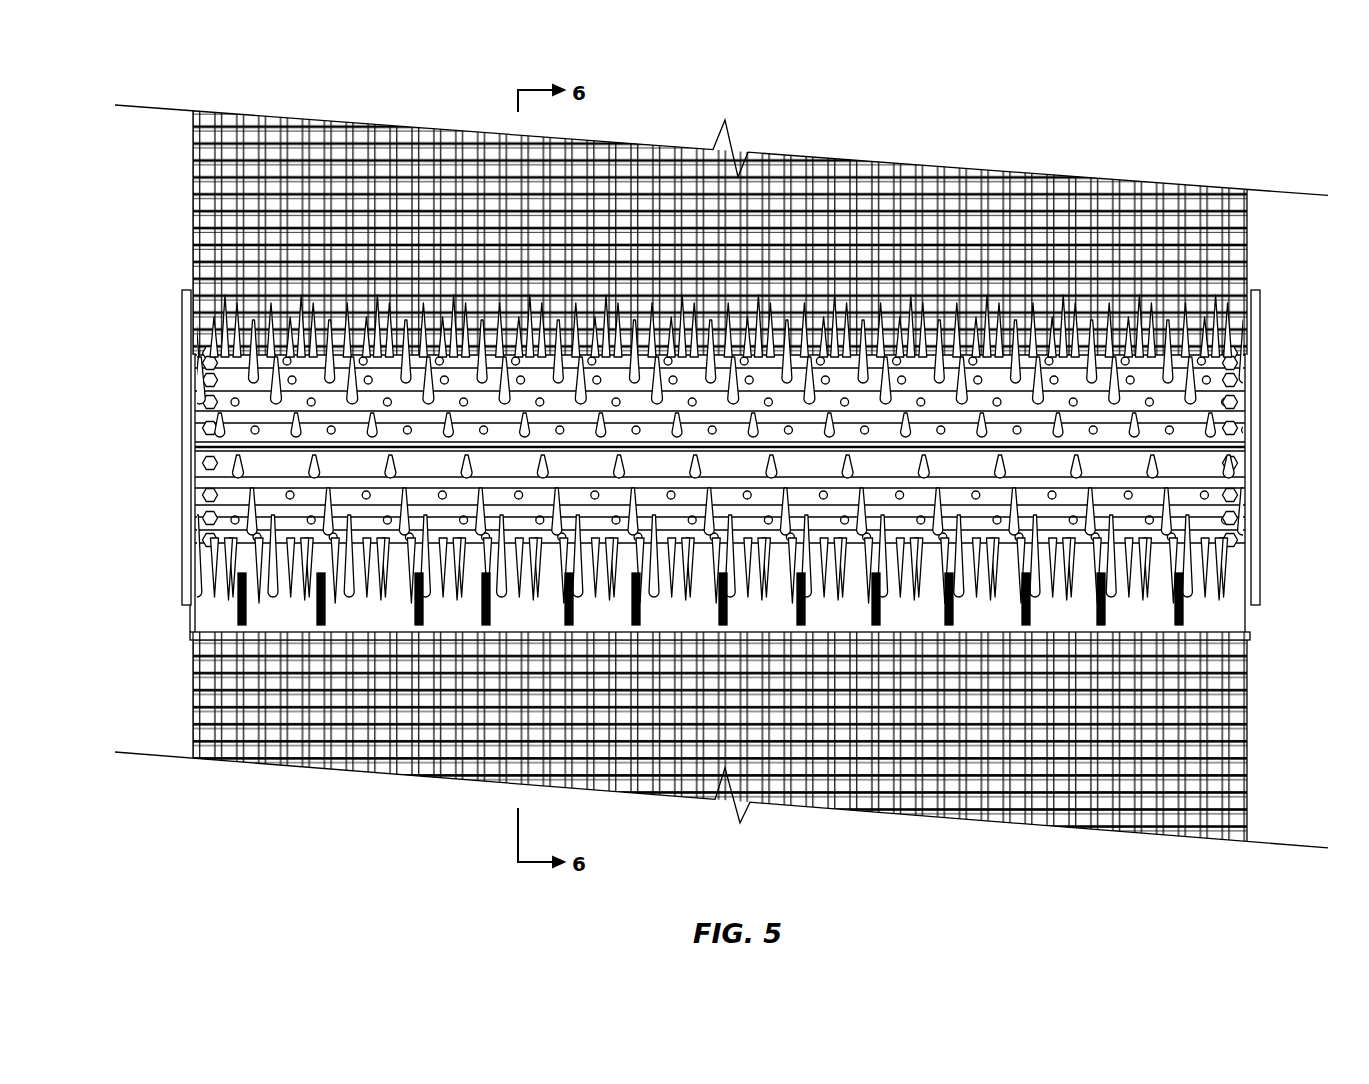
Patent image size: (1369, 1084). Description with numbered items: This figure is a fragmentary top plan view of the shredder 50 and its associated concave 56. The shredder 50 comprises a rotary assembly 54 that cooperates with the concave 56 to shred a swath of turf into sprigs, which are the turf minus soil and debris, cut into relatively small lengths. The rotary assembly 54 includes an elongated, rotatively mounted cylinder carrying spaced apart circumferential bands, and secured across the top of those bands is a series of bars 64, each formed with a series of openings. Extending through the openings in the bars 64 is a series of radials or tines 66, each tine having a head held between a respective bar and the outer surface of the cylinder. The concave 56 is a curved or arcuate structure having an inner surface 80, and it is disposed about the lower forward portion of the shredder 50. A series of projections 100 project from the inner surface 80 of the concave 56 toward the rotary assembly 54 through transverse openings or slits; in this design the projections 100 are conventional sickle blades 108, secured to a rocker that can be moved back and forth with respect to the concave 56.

The shredder 50 is at (150, 273).
The rotary assembly 54 is at (1208, 332).
The concave 56 is at (1268, 624).
The bars 64 is at (228, 425).
The tines 66 is at (1022, 308).
The inner surface 80 is at (1230, 607).
The projections 100 is at (1195, 617).
The blades 108 is at (420, 612).